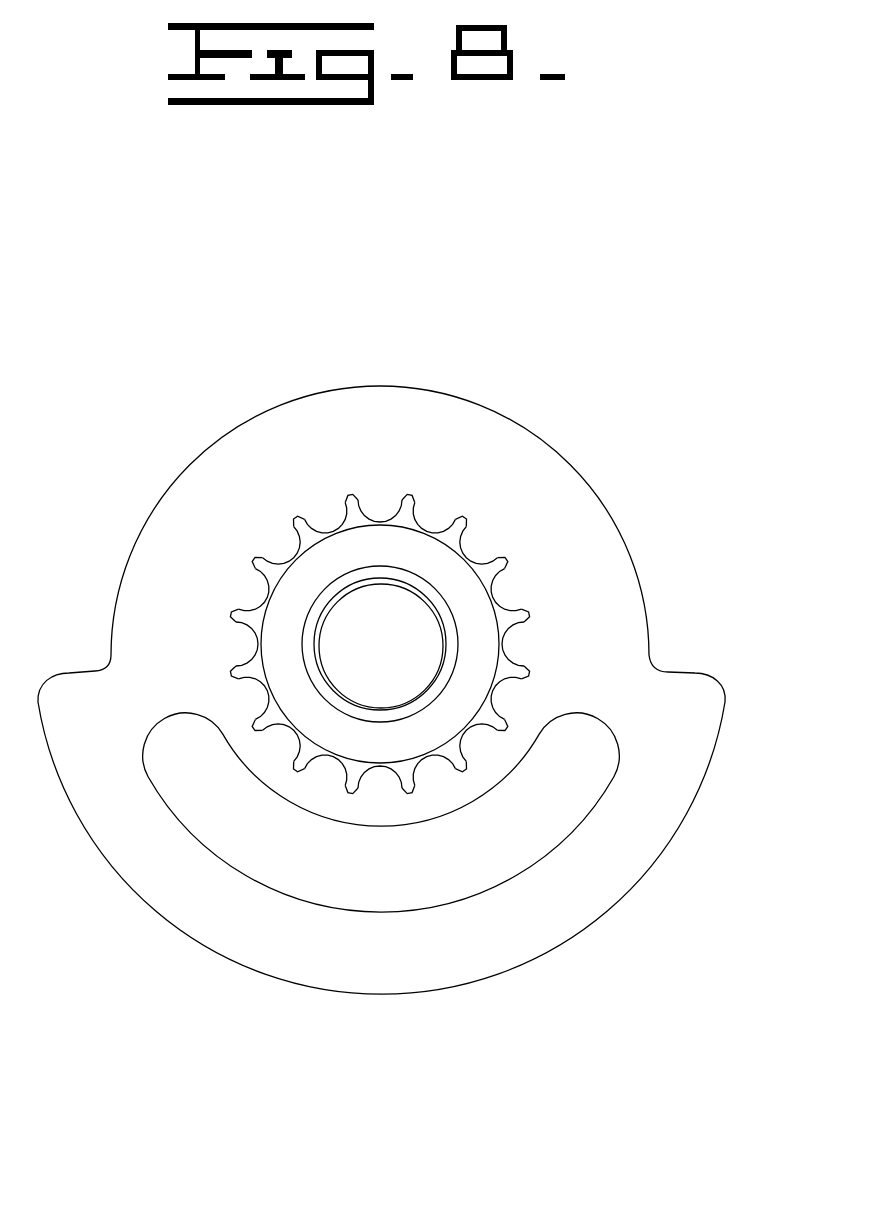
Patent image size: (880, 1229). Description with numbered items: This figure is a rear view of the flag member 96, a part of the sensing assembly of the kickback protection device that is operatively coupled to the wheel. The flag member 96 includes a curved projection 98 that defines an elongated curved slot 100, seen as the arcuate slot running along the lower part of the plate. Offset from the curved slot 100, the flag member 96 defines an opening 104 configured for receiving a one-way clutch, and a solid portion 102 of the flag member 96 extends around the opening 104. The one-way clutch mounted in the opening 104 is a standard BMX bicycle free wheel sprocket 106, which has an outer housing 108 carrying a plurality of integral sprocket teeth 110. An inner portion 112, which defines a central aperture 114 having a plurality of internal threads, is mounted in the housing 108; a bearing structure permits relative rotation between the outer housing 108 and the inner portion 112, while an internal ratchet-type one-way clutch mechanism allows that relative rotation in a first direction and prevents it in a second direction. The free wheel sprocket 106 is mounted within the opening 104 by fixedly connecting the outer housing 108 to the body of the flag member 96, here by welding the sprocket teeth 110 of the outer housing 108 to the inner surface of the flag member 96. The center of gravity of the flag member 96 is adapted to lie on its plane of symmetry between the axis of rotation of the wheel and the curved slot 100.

The flag member 96 is at (385, 704).
The curved projection 98 is at (556, 942).
The elongated curved slot 100 is at (419, 912).
The solid portion 102 is at (150, 572).
The opening 104 is at (409, 632).
The free wheel sprocket 106 is at (505, 645).
The outer housing 108 is at (440, 530).
The sprocket teeth 110 is at (351, 494).
The inner portion 112 is at (310, 574).
The central aperture 114 is at (410, 583).